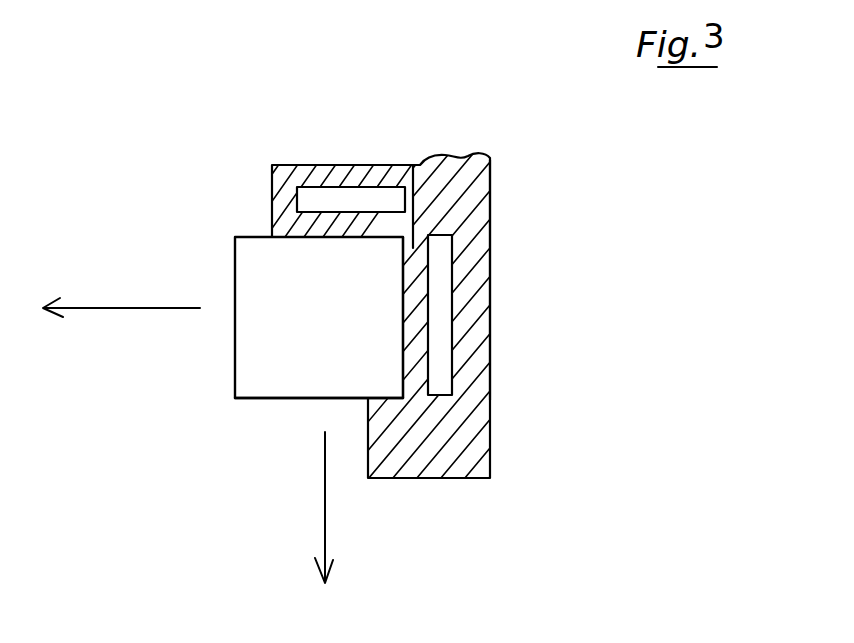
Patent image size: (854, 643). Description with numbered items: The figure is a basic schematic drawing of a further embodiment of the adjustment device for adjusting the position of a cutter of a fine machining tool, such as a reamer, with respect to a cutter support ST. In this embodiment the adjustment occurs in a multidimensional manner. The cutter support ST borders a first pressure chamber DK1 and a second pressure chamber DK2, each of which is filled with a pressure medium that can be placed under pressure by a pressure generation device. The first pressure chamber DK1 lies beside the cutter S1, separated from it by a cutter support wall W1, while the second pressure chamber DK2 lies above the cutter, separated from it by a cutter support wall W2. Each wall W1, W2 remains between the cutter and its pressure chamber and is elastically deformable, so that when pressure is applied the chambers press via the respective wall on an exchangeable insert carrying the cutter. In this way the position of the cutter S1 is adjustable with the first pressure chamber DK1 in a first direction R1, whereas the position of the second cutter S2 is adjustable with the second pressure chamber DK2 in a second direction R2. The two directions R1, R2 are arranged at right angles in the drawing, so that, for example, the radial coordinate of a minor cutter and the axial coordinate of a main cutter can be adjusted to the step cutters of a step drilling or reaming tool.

The cutter support ST is at (457, 437).
The cutter support wall W1 is at (417, 240).
The cutter support wall W2 is at (270, 218).
The first pressure chamber DK1 is at (440, 313).
The second pressure chamber DK2 is at (326, 200).
The cutter S1 is at (233, 347).
The second cutter S2 is at (277, 400).
The first direction R1 is at (121, 286).
The second direction R2 is at (351, 508).